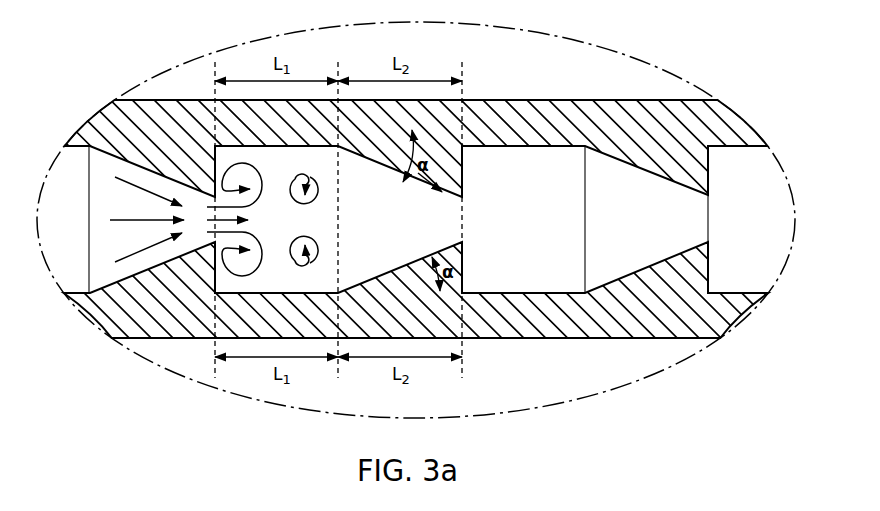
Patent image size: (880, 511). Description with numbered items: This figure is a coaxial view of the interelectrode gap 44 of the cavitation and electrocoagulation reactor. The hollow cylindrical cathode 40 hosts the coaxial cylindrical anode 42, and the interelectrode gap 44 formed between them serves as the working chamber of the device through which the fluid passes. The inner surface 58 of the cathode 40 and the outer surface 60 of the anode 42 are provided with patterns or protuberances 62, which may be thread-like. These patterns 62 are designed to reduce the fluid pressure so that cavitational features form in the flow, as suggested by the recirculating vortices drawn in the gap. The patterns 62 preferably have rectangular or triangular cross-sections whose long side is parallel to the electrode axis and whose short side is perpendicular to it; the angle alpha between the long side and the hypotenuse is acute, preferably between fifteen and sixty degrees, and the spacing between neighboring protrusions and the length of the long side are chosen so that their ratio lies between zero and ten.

The hollow cylindrical cathode 40 is at (440, 255).
The cylindrical anode 42 is at (440, 255).
The interelectrode gap 44 is at (76, 229).
The inner surface of the cathode 58 is at (523, 219).
The outer surface of the anode 60 is at (523, 278).
The patterns or protuberances 62 is at (327, 212).